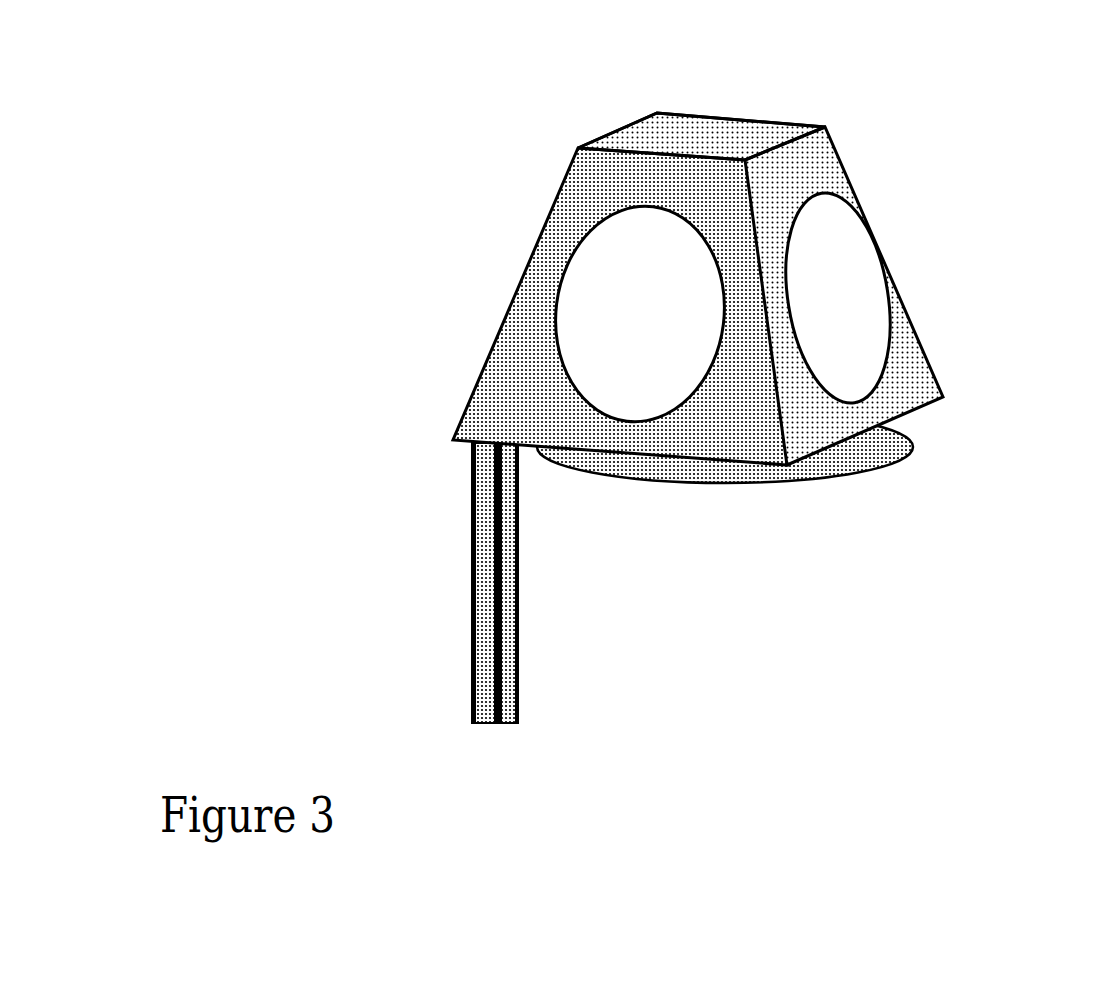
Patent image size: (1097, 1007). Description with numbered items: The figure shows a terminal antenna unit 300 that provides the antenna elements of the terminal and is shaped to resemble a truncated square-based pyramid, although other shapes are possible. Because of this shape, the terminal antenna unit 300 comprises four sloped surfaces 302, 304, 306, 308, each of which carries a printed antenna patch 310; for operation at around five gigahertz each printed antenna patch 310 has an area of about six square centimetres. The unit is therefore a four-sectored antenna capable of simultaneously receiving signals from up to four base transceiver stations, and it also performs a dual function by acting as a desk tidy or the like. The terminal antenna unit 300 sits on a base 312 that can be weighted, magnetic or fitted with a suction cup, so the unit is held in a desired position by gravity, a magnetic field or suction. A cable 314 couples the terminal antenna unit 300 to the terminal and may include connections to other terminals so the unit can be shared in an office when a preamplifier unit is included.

The terminal antenna unit 300 is at (965, 542).
The sloped surface 302 is at (537, 448).
The sloped surface 304 is at (743, 254).
The sloped surface 306 is at (778, 122).
The sloped surface 308 is at (623, 127).
The printed antenna patch 310 is at (800, 248).
The base 312 is at (720, 483).
The cable 314 is at (520, 688).